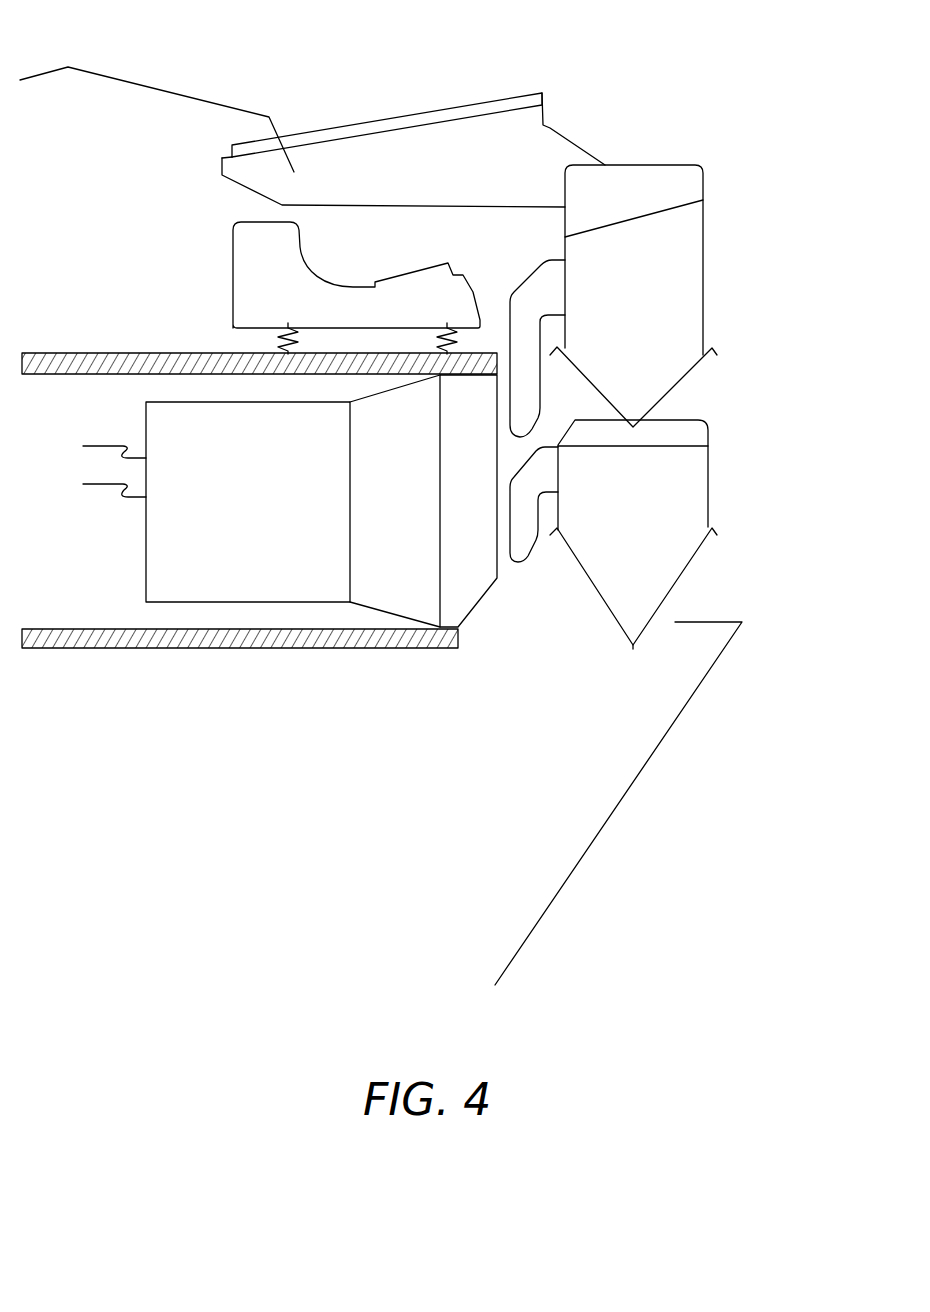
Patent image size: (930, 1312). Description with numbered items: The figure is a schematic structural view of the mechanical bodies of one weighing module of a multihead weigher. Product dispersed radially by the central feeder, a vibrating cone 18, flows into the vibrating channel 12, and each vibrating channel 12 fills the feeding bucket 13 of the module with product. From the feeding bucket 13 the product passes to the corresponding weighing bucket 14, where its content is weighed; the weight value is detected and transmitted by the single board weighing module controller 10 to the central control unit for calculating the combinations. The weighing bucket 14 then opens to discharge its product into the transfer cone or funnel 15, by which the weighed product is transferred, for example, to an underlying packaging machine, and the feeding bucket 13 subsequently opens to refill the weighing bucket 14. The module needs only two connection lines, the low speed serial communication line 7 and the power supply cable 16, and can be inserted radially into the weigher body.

The vibrating cone 18 is at (182, 93).
The vibrating channel 12 is at (503, 128).
The feeding bucket 13 is at (703, 278).
The weighing bucket 14 is at (708, 488).
The funnel 15 is at (617, 802).
The single board weighing module controller 10 is at (157, 547).
The low speed serial communication line 7 is at (105, 443).
The power supply cable 16 is at (105, 488).